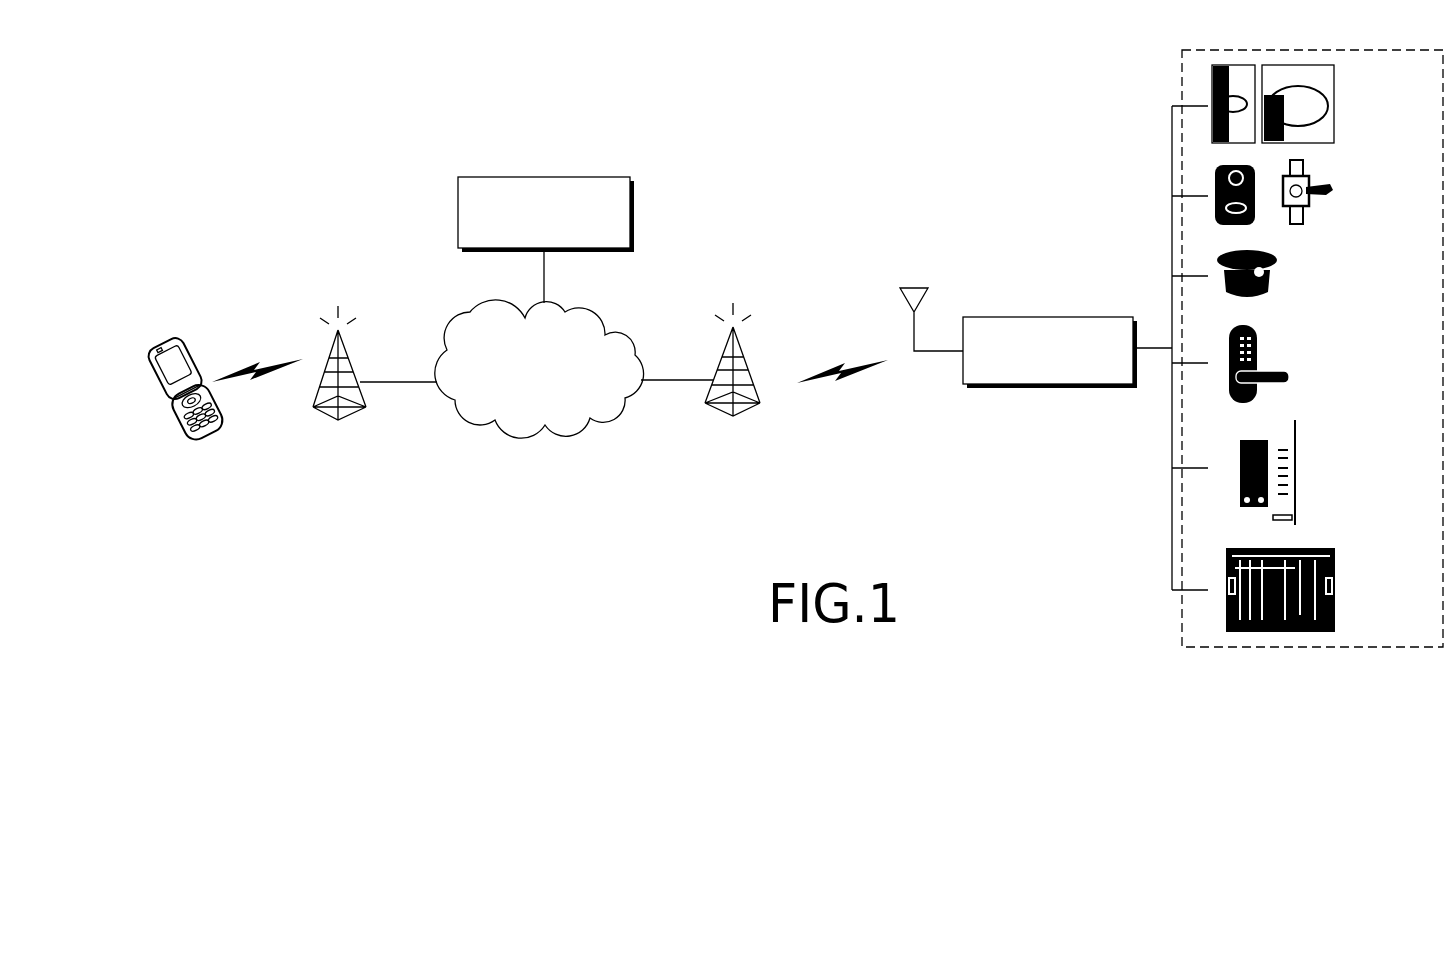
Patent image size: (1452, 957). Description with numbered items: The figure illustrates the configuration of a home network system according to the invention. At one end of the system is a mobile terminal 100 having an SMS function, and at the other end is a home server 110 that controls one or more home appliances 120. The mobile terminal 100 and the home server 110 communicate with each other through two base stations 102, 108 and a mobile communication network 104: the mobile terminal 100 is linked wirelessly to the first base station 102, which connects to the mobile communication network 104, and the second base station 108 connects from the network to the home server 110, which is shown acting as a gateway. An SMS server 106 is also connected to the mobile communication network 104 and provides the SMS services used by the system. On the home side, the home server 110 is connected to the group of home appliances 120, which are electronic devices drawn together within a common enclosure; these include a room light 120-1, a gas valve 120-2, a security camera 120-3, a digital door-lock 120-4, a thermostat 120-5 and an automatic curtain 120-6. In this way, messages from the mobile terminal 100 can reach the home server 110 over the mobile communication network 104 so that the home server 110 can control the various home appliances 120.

The mobile terminal 100 is at (166, 341).
The base station 102 is at (350, 355).
The mobile communication network 104 is at (541, 432).
The SMS server 106 is at (542, 177).
The base station 108 is at (742, 352).
The home server 110 is at (1047, 317).
The home appliances 120 is at (1311, 50).
The room light 120-1 is at (1340, 106).
The gas valve 120-2 is at (1340, 192).
The security camera 120-3 is at (1340, 280).
The digital door-lock 120-4 is at (1340, 366).
The thermostat 120-5 is at (1340, 471).
The automatic curtain 120-6 is at (1340, 591).